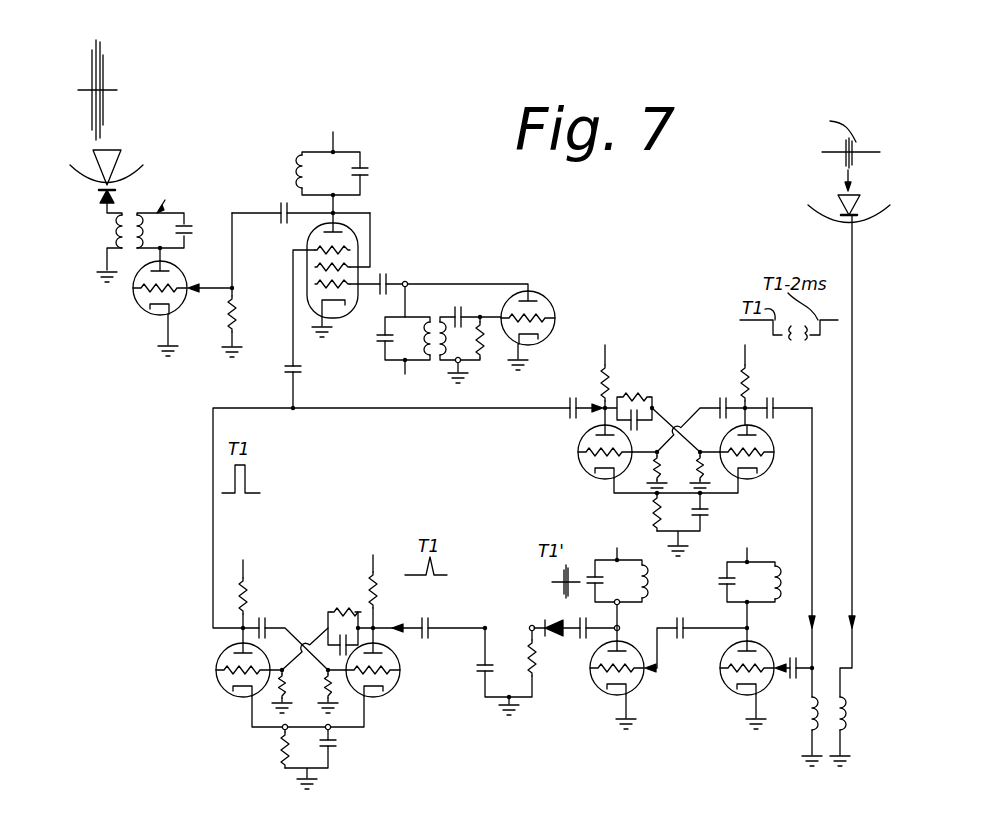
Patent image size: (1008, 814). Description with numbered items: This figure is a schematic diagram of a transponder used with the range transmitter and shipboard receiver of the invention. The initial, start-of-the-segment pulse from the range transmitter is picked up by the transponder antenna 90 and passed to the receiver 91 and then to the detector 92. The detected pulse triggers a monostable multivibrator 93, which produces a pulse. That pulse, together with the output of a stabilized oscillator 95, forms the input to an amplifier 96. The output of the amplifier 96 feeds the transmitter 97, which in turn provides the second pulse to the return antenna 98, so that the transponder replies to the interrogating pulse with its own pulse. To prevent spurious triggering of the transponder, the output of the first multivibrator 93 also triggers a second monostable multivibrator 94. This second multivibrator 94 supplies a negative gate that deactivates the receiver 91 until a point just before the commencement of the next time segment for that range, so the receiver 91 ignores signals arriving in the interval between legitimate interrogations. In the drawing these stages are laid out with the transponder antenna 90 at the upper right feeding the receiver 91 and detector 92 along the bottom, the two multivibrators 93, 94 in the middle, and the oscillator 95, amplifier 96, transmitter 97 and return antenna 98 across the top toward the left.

The transponder antenna 90 is at (893, 255).
The receiver 91 is at (708, 716).
The detector 92 is at (515, 600).
The monostable multivibrator 93 is at (320, 597).
The second monostable multivibrator 94 is at (688, 364).
The stabilized oscillator 95 is at (508, 398).
The amplifier 96 is at (425, 225).
The transmitter 97 is at (236, 209).
The return antenna 98 is at (112, 241).